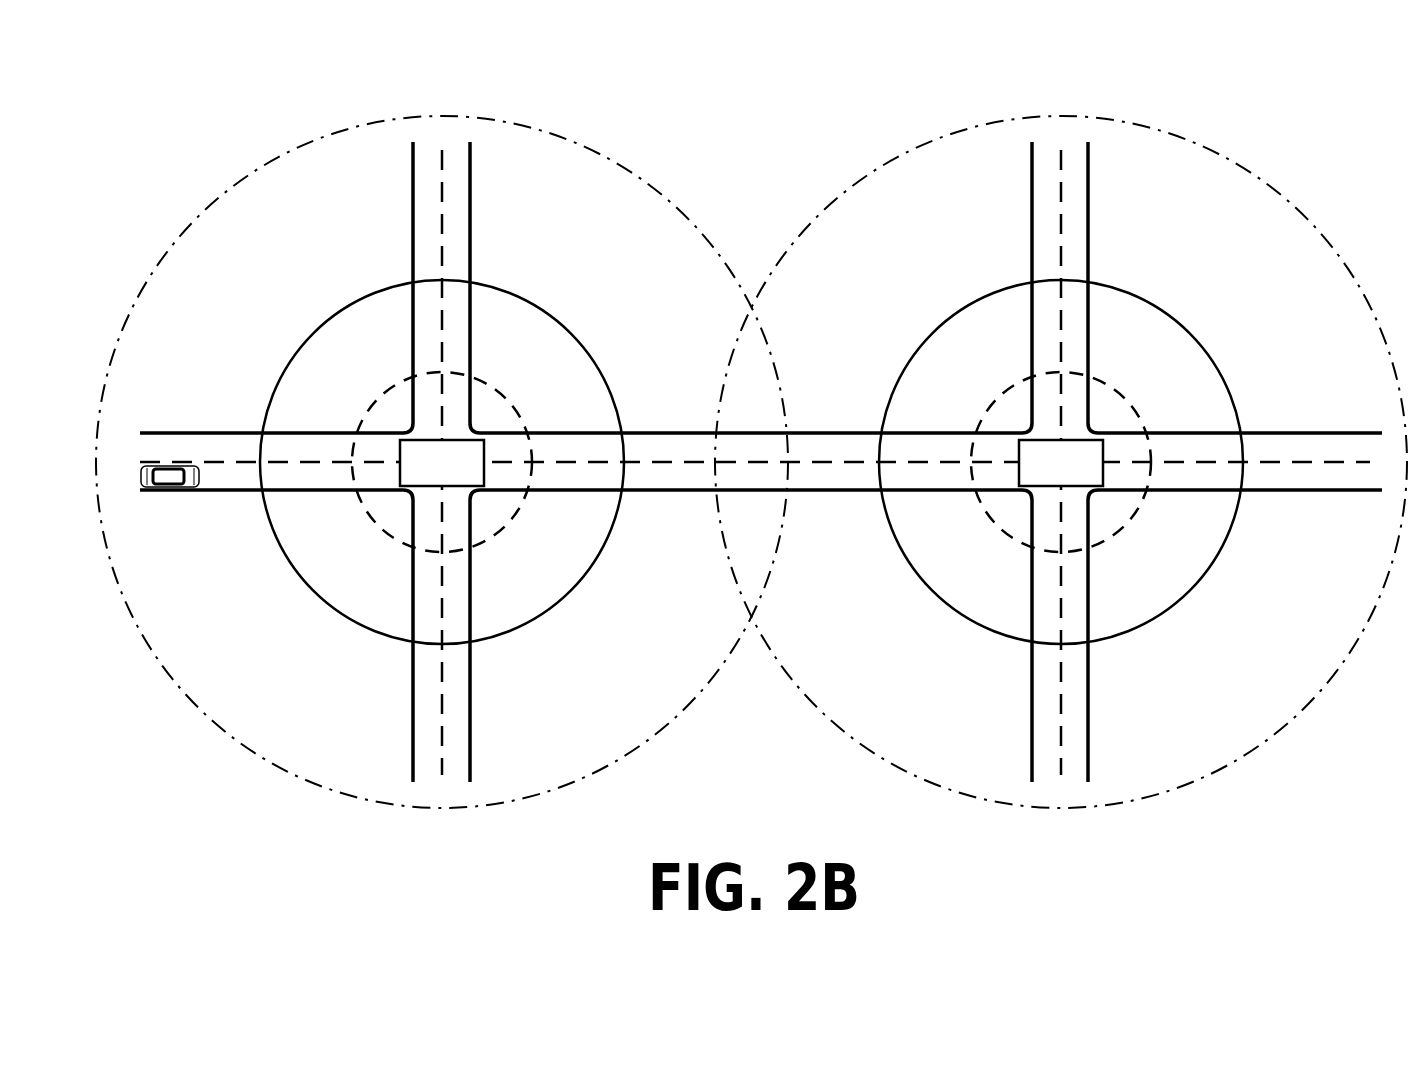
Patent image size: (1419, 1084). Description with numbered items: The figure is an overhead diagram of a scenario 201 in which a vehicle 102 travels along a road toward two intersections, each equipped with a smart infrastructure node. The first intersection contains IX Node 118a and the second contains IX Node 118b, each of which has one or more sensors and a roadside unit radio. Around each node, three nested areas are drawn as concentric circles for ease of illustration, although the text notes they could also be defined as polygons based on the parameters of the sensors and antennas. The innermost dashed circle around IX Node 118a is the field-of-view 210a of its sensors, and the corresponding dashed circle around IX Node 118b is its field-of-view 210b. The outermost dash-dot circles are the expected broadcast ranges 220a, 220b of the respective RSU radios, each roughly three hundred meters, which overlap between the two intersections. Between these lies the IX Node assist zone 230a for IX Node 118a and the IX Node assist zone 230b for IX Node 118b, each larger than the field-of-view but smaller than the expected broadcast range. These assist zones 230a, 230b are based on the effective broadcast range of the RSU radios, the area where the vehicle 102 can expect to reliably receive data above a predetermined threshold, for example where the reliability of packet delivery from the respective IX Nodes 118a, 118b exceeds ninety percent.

The scenario 201 is at (812, 108).
The vehicle 102 is at (182, 490).
The IX Node 118a is at (442, 463).
The IX Node 118b is at (1061, 463).
The field-of-view 210a is at (505, 392).
The field-of-view 210b is at (1107, 383).
The expected broadcast range 220a is at (610, 157).
The expected broadcast range 220b is at (1230, 160).
The IX Node assist zone 230a is at (527, 298).
The IX Node assist zone 230b is at (1130, 292).